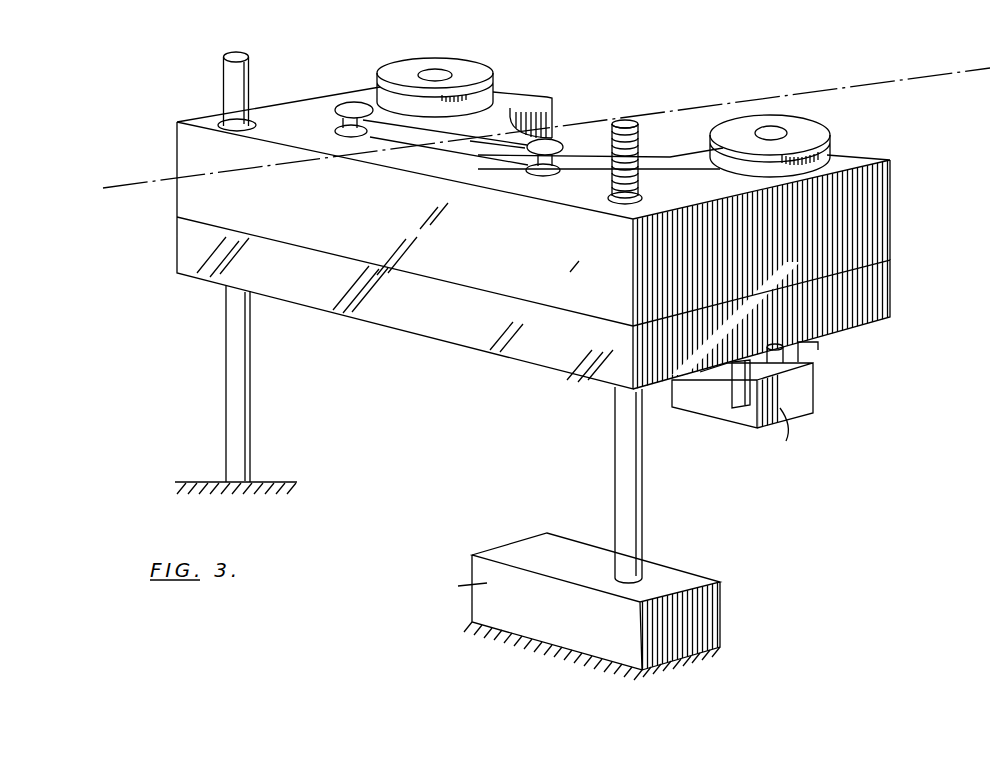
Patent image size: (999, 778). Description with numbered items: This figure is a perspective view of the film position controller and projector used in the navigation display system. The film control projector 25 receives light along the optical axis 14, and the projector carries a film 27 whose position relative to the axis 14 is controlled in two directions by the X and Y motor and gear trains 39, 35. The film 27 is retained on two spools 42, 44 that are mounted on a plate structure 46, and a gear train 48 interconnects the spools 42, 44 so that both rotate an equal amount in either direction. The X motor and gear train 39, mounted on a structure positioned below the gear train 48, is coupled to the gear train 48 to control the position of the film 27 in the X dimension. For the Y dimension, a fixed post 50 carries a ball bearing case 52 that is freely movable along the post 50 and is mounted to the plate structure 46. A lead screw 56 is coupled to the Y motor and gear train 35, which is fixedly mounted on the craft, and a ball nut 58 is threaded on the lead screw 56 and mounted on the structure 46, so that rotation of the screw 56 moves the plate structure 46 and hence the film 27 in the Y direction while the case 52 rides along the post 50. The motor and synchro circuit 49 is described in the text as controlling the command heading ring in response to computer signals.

The optical axis 14 is at (801, 88).
The film control projector 25 is at (477, 404).
The film 27 is at (661, 153).
The Y motor and gear train 35 is at (707, 601).
The X motor and gear train 39 is at (793, 394).
The spool 42 is at (490, 73).
The spool 44 is at (828, 141).
The plate structure 46 is at (488, 173).
The gear train 48 is at (868, 301).
The motor and synchro circuit 49 is at (445, 270).
The fixed post 50 is at (238, 421).
The ball bearing case 52 is at (253, 122).
The lead screw 56 is at (637, 513).
The ball nut 58 is at (623, 207).